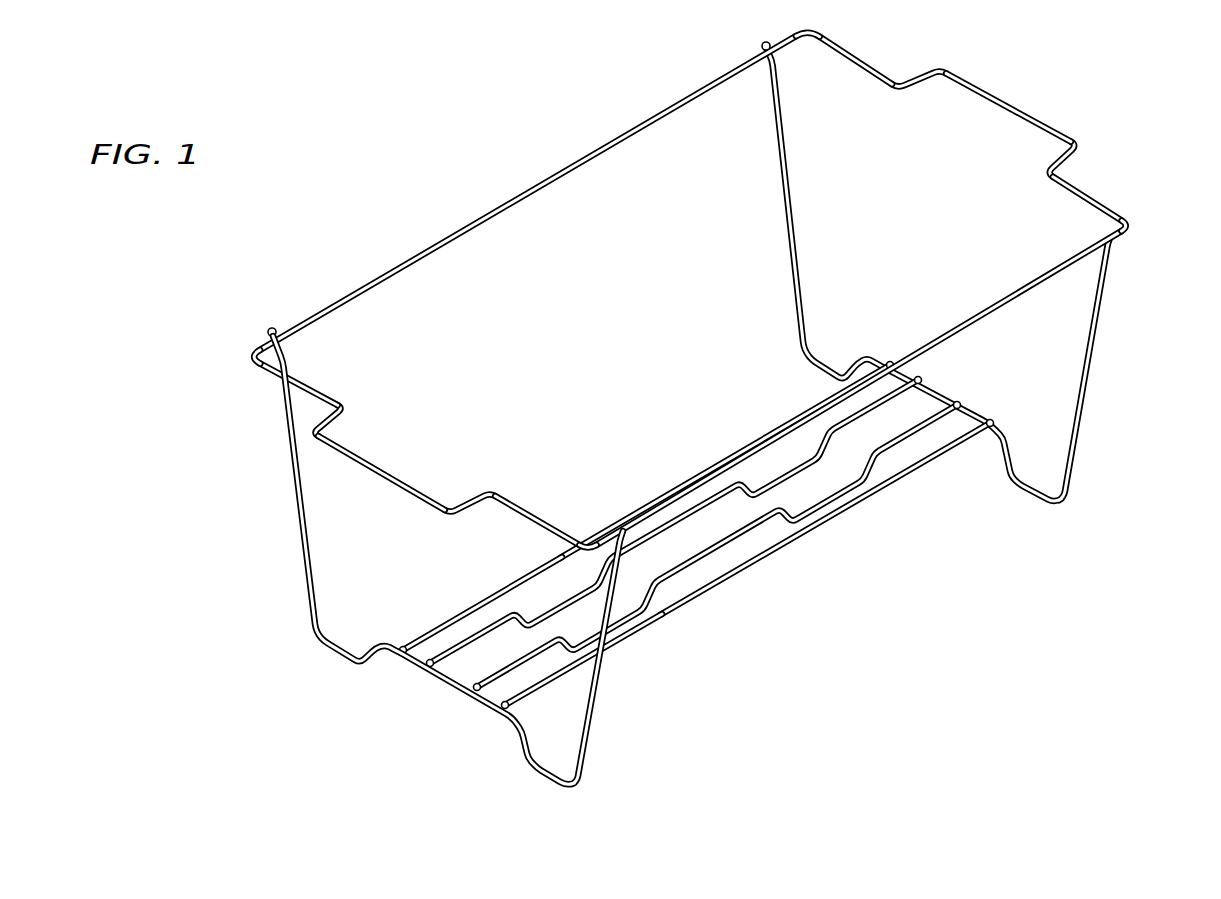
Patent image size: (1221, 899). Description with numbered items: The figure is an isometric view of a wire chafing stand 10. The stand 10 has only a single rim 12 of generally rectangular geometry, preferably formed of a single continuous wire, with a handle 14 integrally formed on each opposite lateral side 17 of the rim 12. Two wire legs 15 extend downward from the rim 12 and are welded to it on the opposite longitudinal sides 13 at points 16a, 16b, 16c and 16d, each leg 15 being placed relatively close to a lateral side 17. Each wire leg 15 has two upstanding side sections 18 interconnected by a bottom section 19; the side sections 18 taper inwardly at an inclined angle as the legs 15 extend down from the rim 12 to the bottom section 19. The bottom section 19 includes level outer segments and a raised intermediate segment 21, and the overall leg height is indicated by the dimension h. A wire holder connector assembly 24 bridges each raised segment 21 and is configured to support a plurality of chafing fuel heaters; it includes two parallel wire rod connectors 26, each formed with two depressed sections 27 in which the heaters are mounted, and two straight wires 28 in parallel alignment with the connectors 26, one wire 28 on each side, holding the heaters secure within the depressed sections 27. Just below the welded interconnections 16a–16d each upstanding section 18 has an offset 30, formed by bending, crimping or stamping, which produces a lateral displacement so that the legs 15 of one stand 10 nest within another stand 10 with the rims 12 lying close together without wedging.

The chafing stand 10 is at (636, 92).
The rim 12 is at (367, 243).
The longitudinal sides 13 is at (505, 197).
The handle 14 is at (372, 474).
The wire legs 15 is at (294, 499).
The welded point 16a is at (268, 330).
The welded point 16b is at (752, 50).
The welded point 16c is at (1130, 243).
The welded point 16d is at (622, 530).
The lateral side 17 is at (343, 407).
The upstanding side sections 18 is at (286, 418).
The bottom section 19 is at (332, 664).
The intermediate segment 21 is at (456, 686).
The wire holder connector assembly 24 is at (735, 598).
The wire rod connectors 26 is at (476, 605).
The depressed sections 27 is at (580, 592).
The straight wires 28 is at (512, 575).
The offset 30 is at (282, 335).
The height of stand h is at (750, 80).